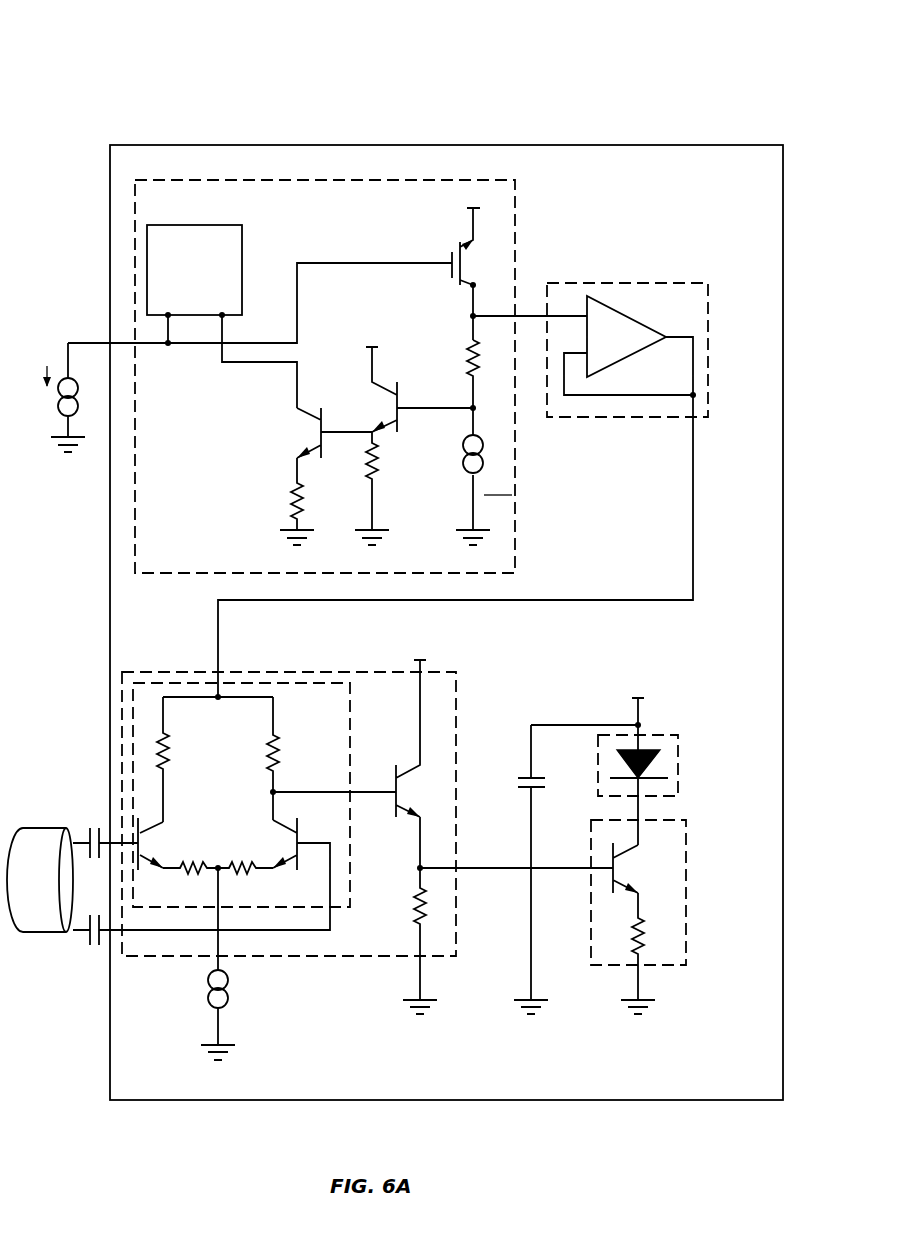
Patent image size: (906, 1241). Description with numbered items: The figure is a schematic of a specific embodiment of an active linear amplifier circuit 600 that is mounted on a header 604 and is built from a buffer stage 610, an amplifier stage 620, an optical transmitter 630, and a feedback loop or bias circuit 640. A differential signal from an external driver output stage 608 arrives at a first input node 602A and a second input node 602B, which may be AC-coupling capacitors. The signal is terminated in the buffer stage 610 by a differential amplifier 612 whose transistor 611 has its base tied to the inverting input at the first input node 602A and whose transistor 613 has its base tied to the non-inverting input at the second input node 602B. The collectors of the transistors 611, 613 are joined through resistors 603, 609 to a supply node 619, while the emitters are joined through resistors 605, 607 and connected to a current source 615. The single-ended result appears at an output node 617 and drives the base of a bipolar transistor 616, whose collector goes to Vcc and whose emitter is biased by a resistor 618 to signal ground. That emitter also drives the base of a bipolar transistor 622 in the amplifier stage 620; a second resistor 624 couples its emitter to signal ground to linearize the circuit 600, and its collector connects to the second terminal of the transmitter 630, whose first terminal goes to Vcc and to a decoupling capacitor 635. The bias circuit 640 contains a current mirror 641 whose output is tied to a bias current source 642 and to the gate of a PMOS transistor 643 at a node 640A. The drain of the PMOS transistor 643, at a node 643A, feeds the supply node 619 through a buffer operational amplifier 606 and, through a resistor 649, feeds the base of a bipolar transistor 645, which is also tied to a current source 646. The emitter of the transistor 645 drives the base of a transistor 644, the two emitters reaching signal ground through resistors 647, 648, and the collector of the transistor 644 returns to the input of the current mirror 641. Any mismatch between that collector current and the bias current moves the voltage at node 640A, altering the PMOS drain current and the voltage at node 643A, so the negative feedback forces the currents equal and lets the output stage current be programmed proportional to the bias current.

The active linear amplifier circuit 600 is at (146, 103).
The header 604 is at (444, 144).
The bias circuit 640 is at (516, 230).
The current mirror 641 is at (199, 271).
The bias current source 642 is at (60, 406).
The PMOS transistor 643 is at (444, 232).
The node 643A is at (470, 286).
The node 640A is at (475, 316).
The transistor 644 is at (289, 430).
The bipolar transistor 645 is at (378, 402).
The current source 646 is at (463, 462).
The resistor 647 is at (290, 495).
The resistor 648 is at (384, 465).
The resistor 649 is at (468, 352).
The buffer operational amplifier 606 is at (628, 283).
The buffer stage 610 is at (461, 690).
The differential amplifier 612 is at (351, 722).
The supply node 619 is at (217, 694).
The resistor 603 is at (172, 752).
The resistor 609 is at (265, 750).
The transistor 611 is at (165, 832).
The transistor 613 is at (270, 845).
The resistor 605 is at (186, 873).
The resistor 607 is at (240, 873).
The output node 617 is at (276, 790).
The current source 615 is at (207, 1000).
The driver output stage 608 is at (42, 826).
The first input node 602A is at (82, 826).
The second input node 602B is at (82, 947).
The bipolar transistor 616 is at (426, 787).
The resistor 618 is at (415, 897).
The decoupling capacitor 635 is at (519, 773).
The optical transmitter 630 is at (679, 740).
The amplifier stage 620 is at (689, 840).
The bipolar transistor 622 is at (646, 868).
The second resistor 624 is at (648, 932).